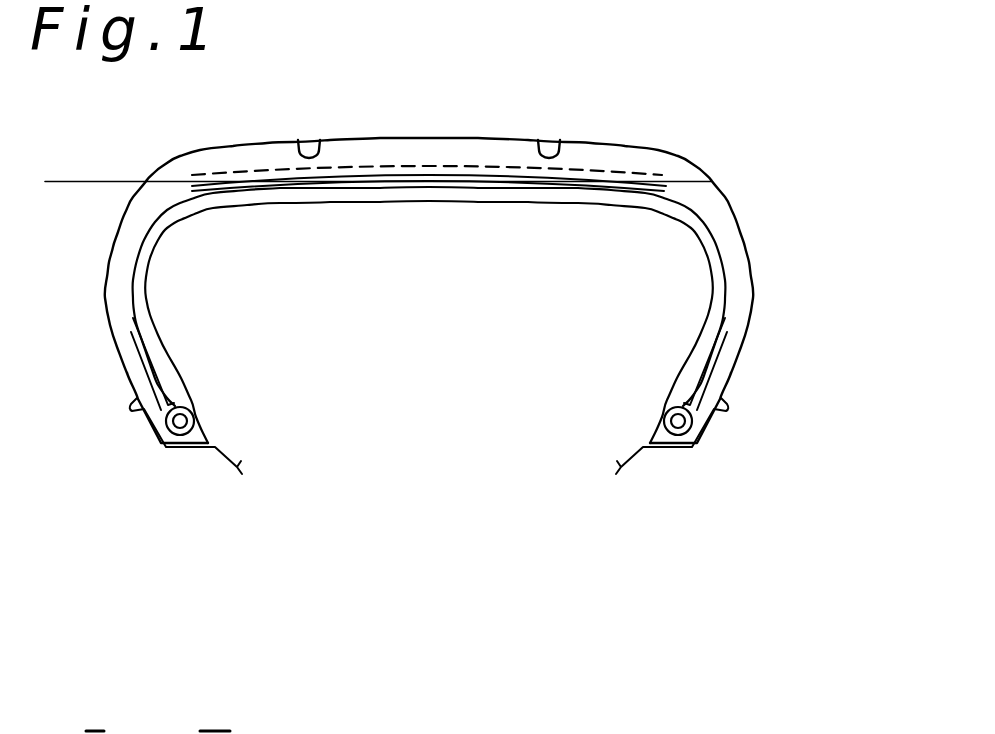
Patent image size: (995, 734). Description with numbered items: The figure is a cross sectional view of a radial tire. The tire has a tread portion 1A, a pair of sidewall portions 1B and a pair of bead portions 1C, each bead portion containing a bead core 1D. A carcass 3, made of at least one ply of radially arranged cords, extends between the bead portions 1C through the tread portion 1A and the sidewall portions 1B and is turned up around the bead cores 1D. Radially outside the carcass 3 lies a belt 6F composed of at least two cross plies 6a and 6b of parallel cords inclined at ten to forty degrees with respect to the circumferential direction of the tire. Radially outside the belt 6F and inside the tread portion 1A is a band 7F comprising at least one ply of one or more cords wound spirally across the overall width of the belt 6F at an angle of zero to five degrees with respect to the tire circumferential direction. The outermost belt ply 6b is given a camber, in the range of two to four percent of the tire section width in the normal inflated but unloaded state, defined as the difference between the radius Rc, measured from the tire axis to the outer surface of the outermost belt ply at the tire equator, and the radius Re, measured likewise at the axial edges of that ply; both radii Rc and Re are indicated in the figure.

The tread portion 1A is at (437, 138).
The sidewall portions 1B is at (743, 237).
The bead portions 1C is at (730, 373).
The bead cores 1D is at (679, 430).
The carcass 3 is at (723, 292).
The belt 6F is at (818, 103).
The belt ply 6a is at (660, 190).
The outermost belt ply 6b is at (643, 177).
The band 7F is at (619, 168).
The radius at belt edge Re is at (65, 205).
The radius at tire equator Rc is at (439, 198).